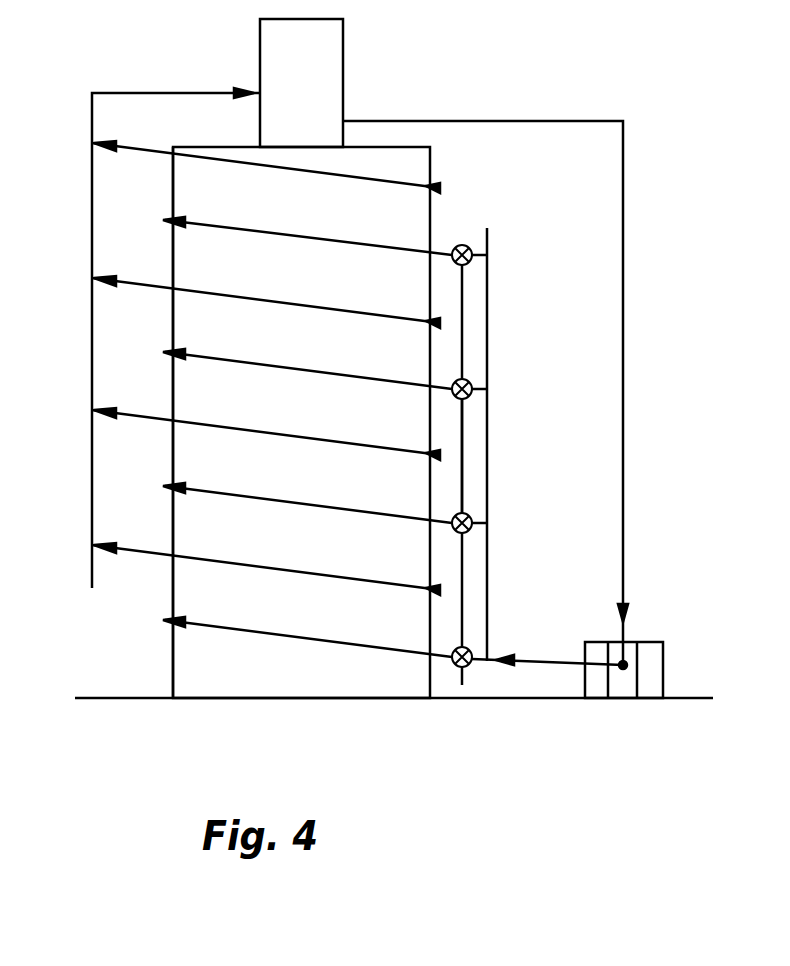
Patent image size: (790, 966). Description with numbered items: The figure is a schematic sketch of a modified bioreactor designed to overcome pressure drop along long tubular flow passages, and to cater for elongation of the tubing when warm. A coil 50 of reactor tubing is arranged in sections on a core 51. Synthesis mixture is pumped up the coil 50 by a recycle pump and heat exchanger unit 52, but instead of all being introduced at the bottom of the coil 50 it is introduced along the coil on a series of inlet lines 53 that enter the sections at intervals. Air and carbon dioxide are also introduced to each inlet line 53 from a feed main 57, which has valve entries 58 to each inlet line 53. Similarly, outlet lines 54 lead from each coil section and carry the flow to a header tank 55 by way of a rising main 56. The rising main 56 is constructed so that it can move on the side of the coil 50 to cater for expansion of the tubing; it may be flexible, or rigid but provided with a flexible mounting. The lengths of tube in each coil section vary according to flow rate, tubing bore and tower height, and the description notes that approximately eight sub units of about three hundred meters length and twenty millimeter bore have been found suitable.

The coil 50 is at (412, 248).
The core 51 is at (182, 326).
The recycle pump and heat exchanger unit 52 is at (655, 677).
The inlet lines 53 is at (442, 383).
The outlet lines 54 is at (160, 152).
The header tank 55 is at (335, 58).
The rising main 56 is at (93, 487).
The feed main 57 is at (463, 578).
The valve entries 58 is at (465, 398).